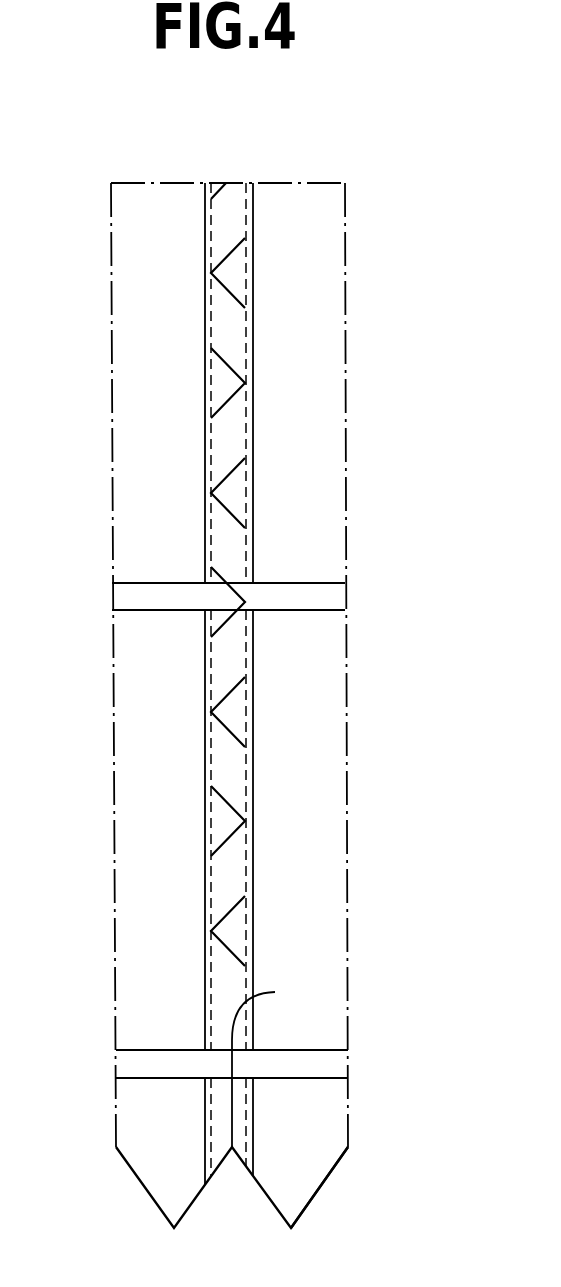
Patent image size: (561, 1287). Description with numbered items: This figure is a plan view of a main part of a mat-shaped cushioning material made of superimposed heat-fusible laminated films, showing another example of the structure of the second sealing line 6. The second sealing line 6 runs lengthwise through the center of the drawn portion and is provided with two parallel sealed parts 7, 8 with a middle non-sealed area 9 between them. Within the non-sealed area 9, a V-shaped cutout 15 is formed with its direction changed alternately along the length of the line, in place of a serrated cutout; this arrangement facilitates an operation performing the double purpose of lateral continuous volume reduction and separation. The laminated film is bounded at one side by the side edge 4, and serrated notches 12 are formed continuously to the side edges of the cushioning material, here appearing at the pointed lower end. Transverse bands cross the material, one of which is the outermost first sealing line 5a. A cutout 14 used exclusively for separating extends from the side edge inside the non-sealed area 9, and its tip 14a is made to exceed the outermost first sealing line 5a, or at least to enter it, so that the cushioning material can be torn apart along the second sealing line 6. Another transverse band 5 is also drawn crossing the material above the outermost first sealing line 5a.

The side edge 4 is at (330, 1122).
The upper band 5 is at (281, 598).
The outermost first sealing line 5a is at (295, 1062).
The second sealing line 6 is at (253, 862).
The sealed part 7 is at (208, 758).
The sealed part 8 is at (253, 773).
The non-sealed area 9 is at (230, 657).
The serrated notches 12 is at (313, 1195).
The cutout 14 is at (232, 1114).
The tip 14a is at (275, 992).
The V-shaped cutout 15 is at (229, 400).